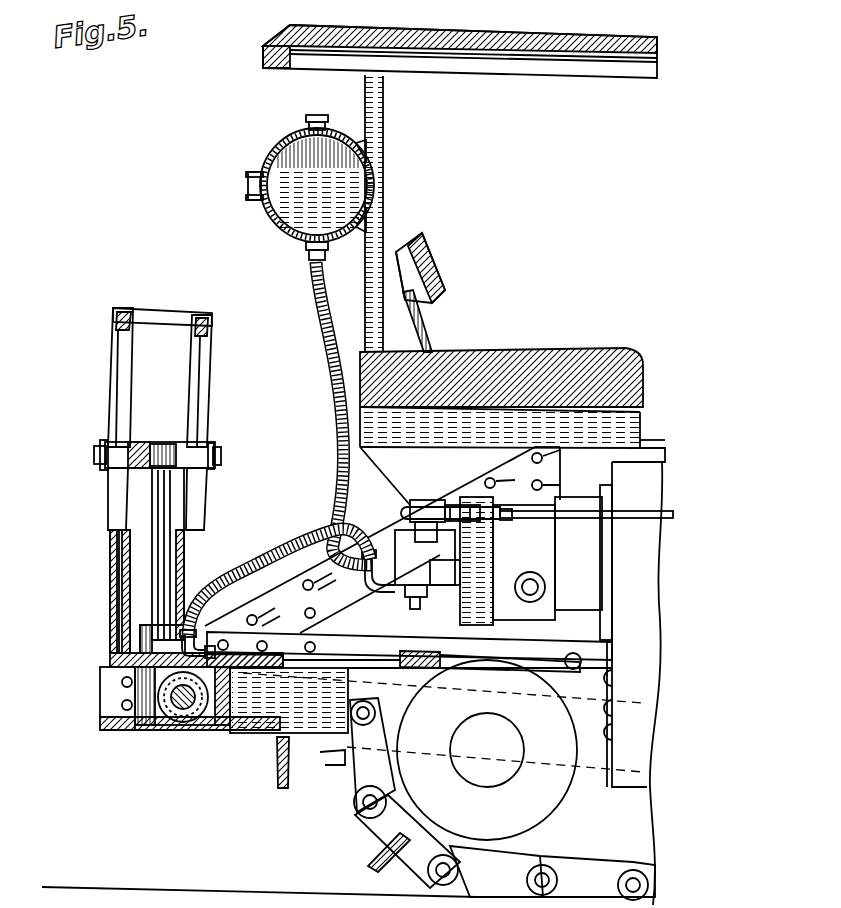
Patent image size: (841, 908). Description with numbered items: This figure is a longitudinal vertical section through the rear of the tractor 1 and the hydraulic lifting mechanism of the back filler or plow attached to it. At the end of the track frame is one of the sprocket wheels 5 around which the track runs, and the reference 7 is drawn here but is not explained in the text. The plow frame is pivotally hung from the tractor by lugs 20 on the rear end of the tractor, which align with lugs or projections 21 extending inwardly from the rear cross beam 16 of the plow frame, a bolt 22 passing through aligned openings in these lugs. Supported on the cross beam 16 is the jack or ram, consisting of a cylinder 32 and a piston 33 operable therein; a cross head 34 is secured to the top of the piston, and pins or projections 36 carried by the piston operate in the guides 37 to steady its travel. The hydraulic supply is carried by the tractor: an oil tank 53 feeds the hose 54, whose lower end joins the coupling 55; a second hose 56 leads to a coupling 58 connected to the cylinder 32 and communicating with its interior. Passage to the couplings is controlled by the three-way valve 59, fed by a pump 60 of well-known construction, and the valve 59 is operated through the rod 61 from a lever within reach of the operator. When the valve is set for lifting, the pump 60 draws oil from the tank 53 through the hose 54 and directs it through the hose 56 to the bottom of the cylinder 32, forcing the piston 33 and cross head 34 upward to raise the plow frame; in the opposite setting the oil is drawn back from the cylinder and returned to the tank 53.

The tractor 1 is at (252, 717).
The sprocket wheel 5 is at (375, 850).
The wheel 7 is at (460, 787).
The rear cross beam 16 is at (130, 688).
The lugs 20 is at (205, 713).
The lugs or projections 21 is at (141, 730).
The bolt 22 is at (184, 706).
The cylinder 32 is at (174, 573).
The piston 33 is at (137, 573).
The cross head 34 is at (160, 442).
The pins or projections 36 is at (221, 456).
The guides 37 is at (113, 404).
The oil tank 53 is at (340, 163).
The hose 54 is at (322, 340).
The coupling 55 is at (370, 573).
The hose 56 is at (255, 556).
The coupling 58 is at (192, 632).
The valve 59 is at (424, 510).
The pump 60 is at (493, 472).
The rod 61 is at (577, 520).